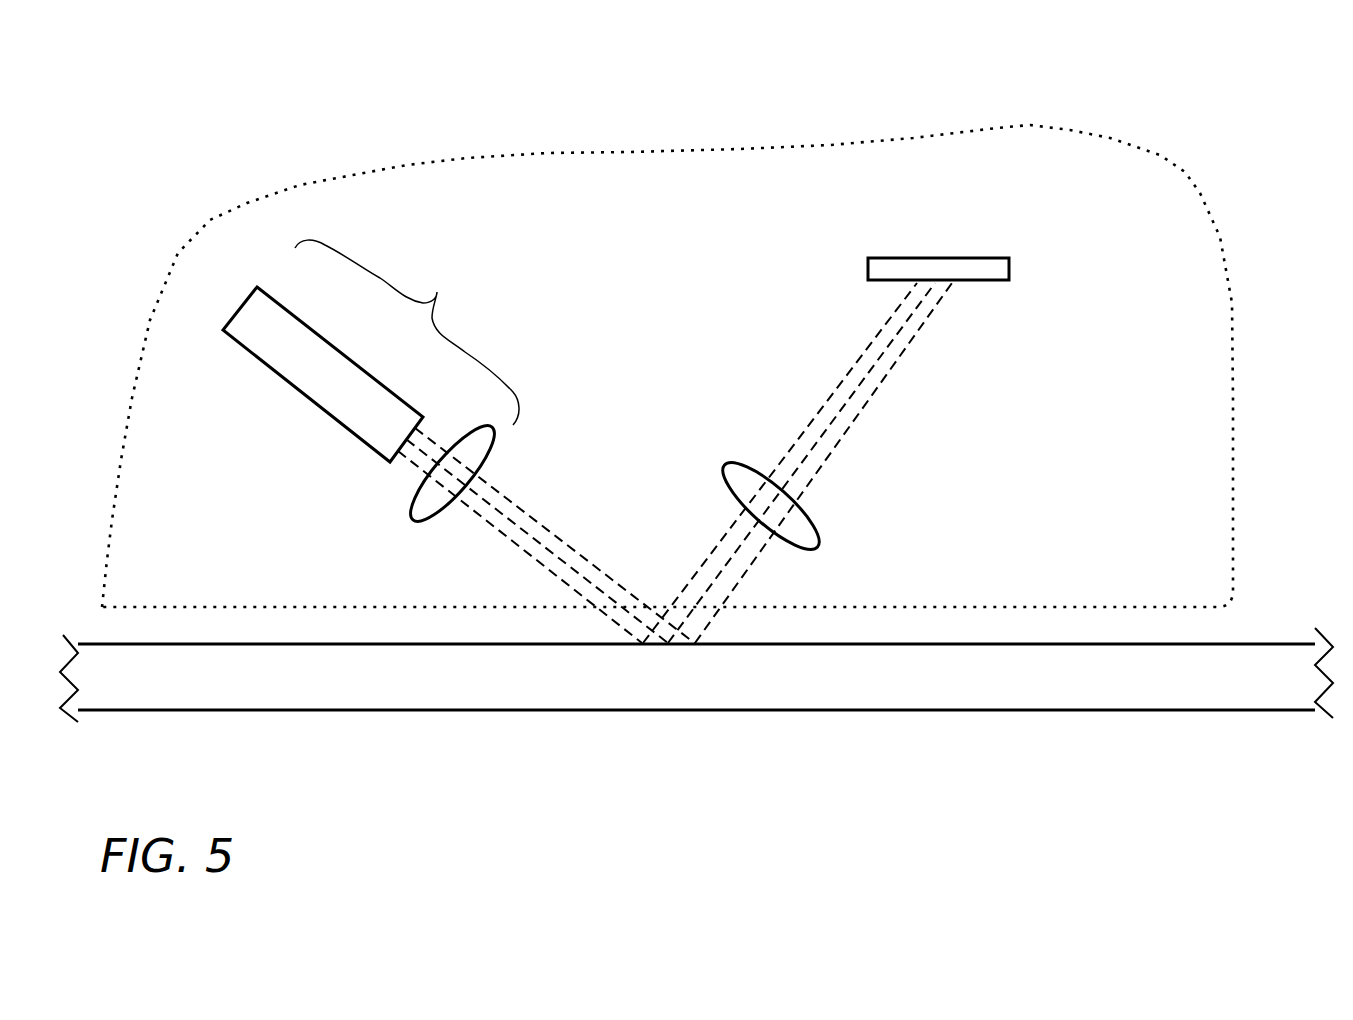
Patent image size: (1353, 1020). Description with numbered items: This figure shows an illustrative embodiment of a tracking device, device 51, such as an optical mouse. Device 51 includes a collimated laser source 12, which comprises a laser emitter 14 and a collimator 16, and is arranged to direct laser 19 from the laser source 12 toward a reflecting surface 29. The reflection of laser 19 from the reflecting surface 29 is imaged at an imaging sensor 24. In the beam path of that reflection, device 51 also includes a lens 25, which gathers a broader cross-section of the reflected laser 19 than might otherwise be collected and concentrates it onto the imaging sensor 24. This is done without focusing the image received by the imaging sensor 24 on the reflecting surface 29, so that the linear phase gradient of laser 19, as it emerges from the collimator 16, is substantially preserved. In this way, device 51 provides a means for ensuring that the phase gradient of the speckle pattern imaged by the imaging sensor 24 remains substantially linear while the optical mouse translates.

The collimated laser source 12 is at (407, 332).
The laser emitter 14 is at (273, 372).
The collimator 16 is at (413, 512).
The laser 19 is at (503, 490).
The imaging sensor 24 is at (947, 257).
The lens 25 is at (818, 537).
The reflecting surface 29 is at (1243, 642).
The device 51 is at (1172, 162).